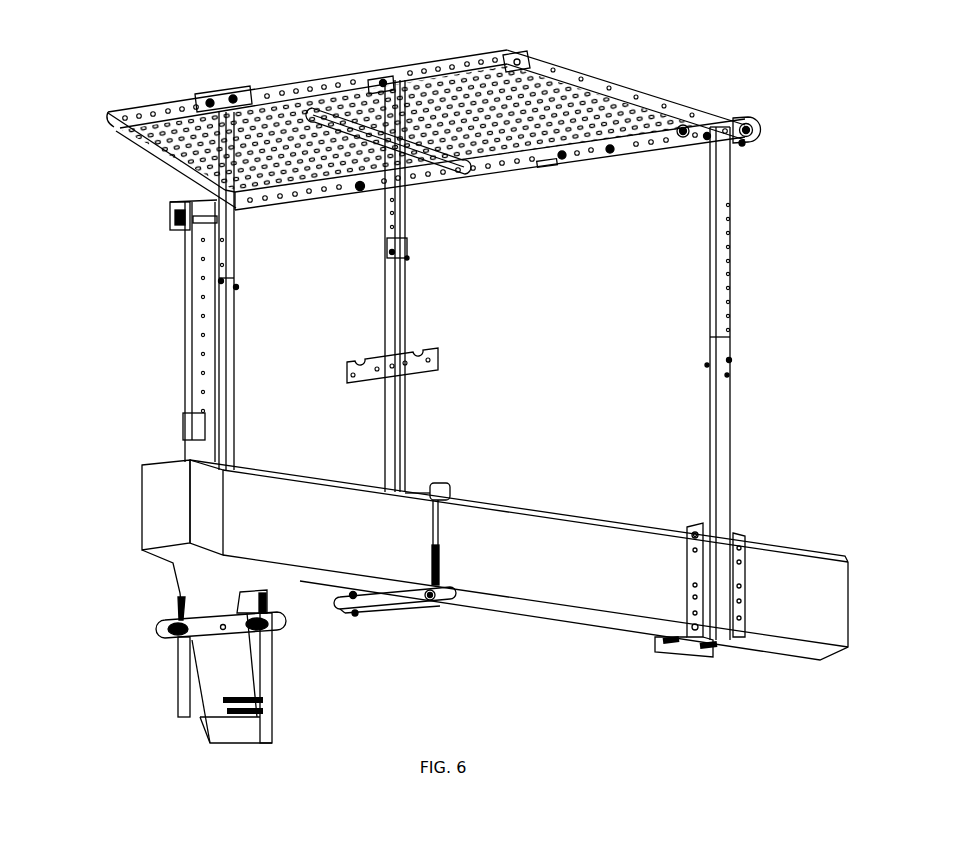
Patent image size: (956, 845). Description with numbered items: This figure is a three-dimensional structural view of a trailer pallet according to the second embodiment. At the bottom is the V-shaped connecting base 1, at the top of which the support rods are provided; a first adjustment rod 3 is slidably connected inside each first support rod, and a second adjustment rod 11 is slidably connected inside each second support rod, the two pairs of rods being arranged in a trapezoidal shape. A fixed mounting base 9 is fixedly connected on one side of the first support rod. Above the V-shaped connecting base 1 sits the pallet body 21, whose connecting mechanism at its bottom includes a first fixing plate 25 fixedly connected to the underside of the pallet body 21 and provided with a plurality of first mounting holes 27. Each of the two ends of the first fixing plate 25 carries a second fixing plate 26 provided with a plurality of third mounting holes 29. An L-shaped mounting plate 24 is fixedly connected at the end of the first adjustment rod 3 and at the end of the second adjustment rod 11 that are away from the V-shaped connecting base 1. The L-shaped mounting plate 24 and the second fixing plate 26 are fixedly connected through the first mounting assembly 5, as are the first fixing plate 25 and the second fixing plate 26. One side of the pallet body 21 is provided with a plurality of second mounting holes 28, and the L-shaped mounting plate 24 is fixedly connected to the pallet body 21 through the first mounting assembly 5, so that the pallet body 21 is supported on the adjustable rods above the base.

The V-shaped connecting base 1 is at (178, 520).
The first adjustment rod 3 is at (432, 231).
The first mounting assembly 5 is at (757, 130).
The fixed mounting base 9 is at (350, 372).
The second adjustment rod 11 is at (717, 297).
The pallet body 21 is at (120, 127).
The L-shaped mounting plate 24 is at (220, 95).
The first fixing plate 25 is at (455, 172).
The second fixing plate 26 is at (187, 199).
The first mounting holes 27 is at (345, 203).
The second mounting holes 28 is at (555, 140).
The third mounting holes 29 is at (680, 127).